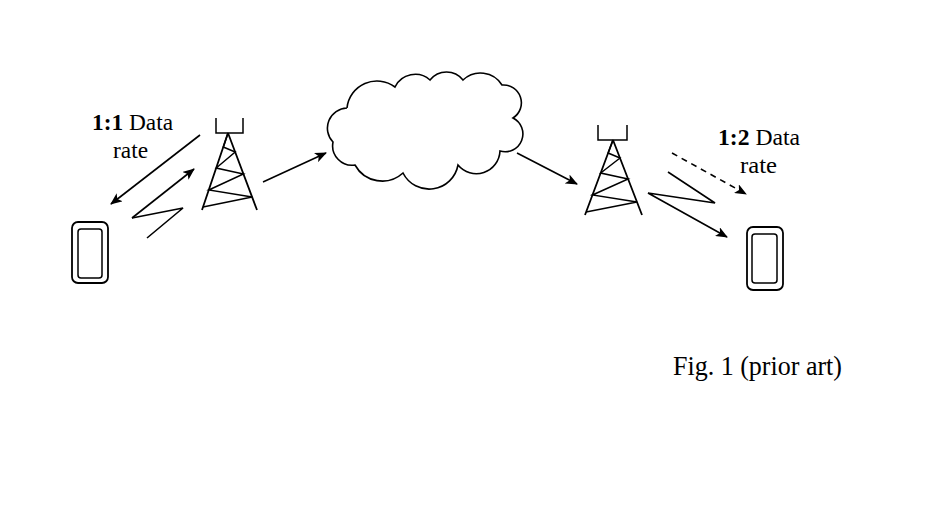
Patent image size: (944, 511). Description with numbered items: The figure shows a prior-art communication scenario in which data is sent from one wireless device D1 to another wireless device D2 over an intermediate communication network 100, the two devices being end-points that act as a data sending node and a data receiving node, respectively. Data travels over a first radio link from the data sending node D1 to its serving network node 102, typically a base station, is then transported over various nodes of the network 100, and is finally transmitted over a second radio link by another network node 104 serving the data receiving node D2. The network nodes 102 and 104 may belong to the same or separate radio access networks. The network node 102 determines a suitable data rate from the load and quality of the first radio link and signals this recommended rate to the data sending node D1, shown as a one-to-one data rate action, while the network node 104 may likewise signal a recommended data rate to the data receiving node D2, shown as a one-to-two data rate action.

The intermediate communication network 100 is at (438, 56).
The network node 102 is at (233, 100).
The network node 104 is at (628, 111).
The wireless device D1 is at (108, 258).
The wireless device D2 is at (783, 262).